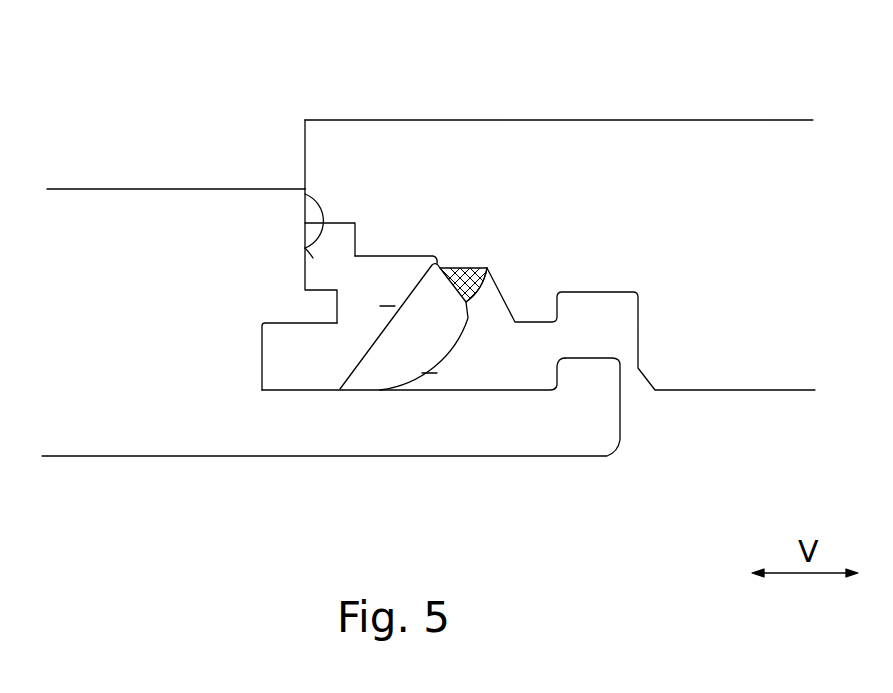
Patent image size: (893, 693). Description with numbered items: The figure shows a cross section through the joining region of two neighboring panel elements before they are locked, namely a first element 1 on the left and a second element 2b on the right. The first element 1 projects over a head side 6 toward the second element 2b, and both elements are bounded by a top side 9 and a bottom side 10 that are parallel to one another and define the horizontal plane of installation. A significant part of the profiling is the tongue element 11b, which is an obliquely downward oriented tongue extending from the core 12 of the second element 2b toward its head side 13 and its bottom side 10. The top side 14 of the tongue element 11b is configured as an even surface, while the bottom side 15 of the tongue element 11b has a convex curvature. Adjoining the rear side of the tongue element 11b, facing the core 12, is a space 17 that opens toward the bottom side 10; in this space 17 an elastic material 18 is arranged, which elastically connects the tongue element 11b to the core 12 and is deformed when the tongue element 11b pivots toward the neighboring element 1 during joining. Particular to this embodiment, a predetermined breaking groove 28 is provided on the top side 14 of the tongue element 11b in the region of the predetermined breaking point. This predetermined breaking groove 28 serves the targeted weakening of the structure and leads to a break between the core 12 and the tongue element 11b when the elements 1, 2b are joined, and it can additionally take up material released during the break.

The first element 1 is at (127, 188).
The second element 2b is at (695, 118).
The head side 6 is at (305, 189).
The top side 9 is at (783, 108).
The bottom side 10 is at (128, 470).
The tongue element 11b is at (388, 345).
The core 12 is at (821, 223).
The head side 13 is at (302, 147).
The top side 14 is at (392, 305).
The bottom side 15 is at (423, 374).
The space 17 is at (483, 308).
The elastic material 18 is at (487, 268).
The predetermined breaking groove 28 is at (438, 257).